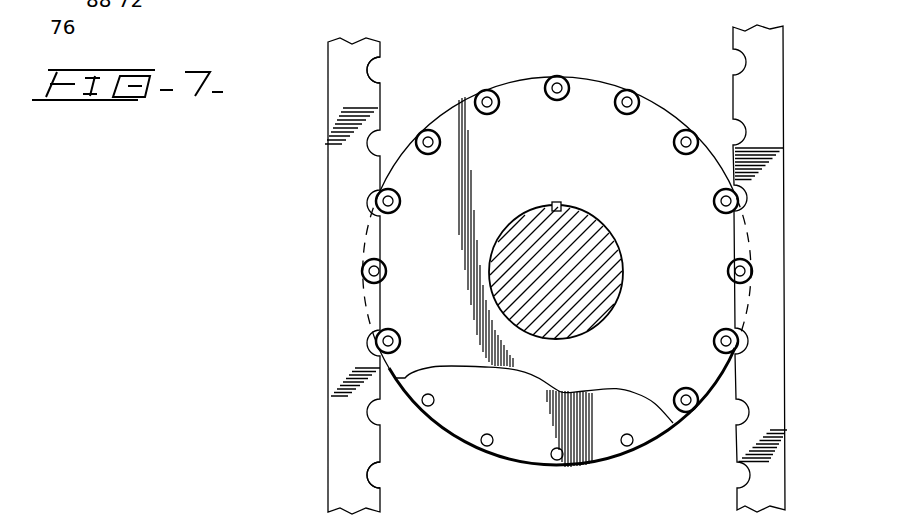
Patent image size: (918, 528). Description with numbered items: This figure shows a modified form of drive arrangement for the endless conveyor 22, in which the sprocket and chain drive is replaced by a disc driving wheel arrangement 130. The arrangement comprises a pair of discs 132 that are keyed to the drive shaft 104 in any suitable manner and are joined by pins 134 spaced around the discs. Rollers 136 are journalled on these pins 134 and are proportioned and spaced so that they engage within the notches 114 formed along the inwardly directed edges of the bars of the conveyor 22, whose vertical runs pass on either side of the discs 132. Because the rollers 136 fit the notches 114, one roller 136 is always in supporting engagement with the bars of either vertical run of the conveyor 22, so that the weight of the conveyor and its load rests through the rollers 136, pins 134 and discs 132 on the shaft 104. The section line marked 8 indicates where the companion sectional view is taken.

The endless conveyor 22 is at (770, 105).
The notches 114 is at (374, 68).
The disc driving wheel arrangement 130 is at (605, 74).
The discs 132 is at (523, 90).
The pins 134 is at (485, 98).
The rollers 136 is at (427, 130).
The drive shaft 104 is at (606, 222).
The section line 8- 8 is at (321, 273).